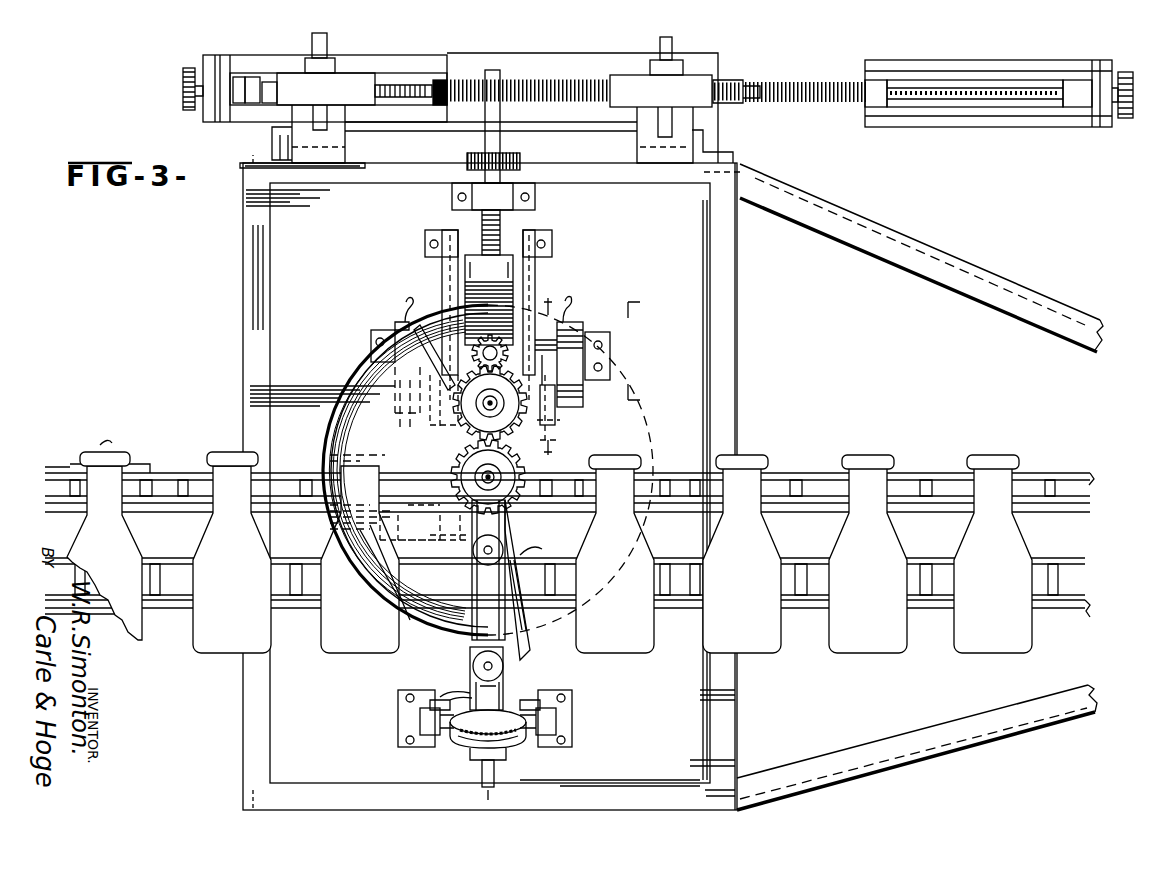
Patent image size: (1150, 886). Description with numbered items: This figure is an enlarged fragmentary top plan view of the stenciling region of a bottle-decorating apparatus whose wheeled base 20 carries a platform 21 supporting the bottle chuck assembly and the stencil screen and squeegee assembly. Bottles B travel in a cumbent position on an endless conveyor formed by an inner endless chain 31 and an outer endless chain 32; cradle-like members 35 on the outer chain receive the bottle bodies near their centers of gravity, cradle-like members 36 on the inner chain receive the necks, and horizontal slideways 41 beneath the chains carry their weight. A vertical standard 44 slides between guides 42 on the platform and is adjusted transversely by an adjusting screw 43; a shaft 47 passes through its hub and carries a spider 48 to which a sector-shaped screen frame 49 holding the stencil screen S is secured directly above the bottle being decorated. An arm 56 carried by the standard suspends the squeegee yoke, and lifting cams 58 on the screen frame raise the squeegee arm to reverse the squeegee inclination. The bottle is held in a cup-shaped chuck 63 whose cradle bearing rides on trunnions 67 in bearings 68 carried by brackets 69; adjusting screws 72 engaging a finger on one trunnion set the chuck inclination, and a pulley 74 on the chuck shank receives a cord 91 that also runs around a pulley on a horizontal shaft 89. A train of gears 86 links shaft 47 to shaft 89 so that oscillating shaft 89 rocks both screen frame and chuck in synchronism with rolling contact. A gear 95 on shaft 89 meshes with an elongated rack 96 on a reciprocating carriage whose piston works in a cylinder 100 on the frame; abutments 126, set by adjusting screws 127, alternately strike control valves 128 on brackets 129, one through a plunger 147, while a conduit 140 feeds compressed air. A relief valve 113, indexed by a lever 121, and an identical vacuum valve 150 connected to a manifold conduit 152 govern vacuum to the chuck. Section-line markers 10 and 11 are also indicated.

The platform 21 is at (488, 482).
The wheeled base 20 is at (945, 266).
The conduit 140 is at (327, 45).
The cylinder 100 is at (712, 60).
The control valve 128 is at (300, 75).
The adjusting screw 127 is at (182, 72).
The abutment 126 is at (250, 85).
The bracket 129 is at (295, 135).
The gear 95 is at (540, 80).
The elongated rack 96 is at (596, 80).
The plunger 147 is at (742, 86).
The horizontal shaft 89 is at (500, 120).
The cradle-like member 36 is at (132, 475).
The inner endless chain 31 is at (180, 505).
The outer endless chain 32 is at (150, 600).
The cradle-like member 35 is at (150, 625).
The horizontal slideway 41 is at (88, 455).
The bottle B is at (108, 447).
The stencil screen S is at (372, 418).
The sector-shaped screen frame 49 is at (332, 420).
The spider 48 is at (446, 512).
The adjusting screw 43 is at (500, 232).
The guide 42 is at (425, 244).
The vertical standard 44 is at (513, 278).
The relief valve 113 is at (398, 322).
The vacuum valve 150 is at (583, 330).
The lever 121 is at (557, 408).
The section line 10 is at (640, 342).
The section line 11 is at (551, 371).
The trunnion 67 is at (505, 367).
The train of gears 86 is at (462, 415).
The shaft 47 is at (488, 477).
The arm 56 is at (488, 570).
The lifting cam 58 is at (528, 642).
The cup-shaped chuck 63 is at (505, 686).
The bracket 69 is at (446, 697).
The adjusting screw 72 is at (430, 702).
The bearing 68 is at (420, 716).
The pulley 74 is at (505, 742).
The manifold conduit 152 is at (482, 790).
The cord 91 is at (497, 775).